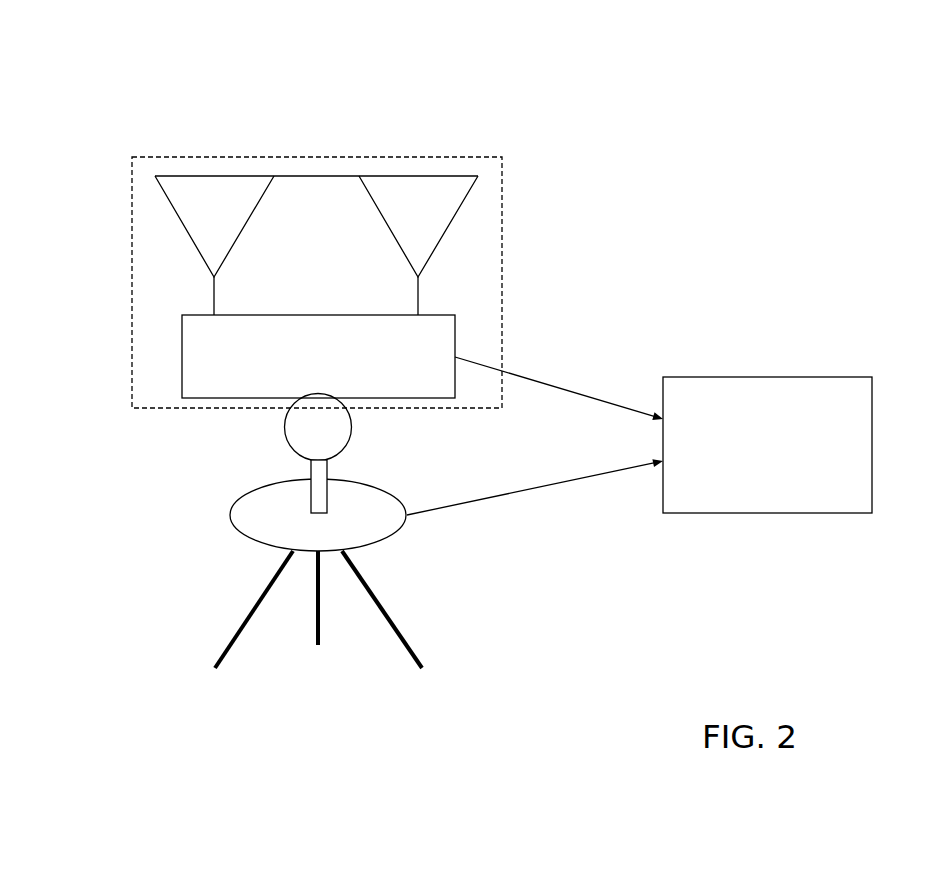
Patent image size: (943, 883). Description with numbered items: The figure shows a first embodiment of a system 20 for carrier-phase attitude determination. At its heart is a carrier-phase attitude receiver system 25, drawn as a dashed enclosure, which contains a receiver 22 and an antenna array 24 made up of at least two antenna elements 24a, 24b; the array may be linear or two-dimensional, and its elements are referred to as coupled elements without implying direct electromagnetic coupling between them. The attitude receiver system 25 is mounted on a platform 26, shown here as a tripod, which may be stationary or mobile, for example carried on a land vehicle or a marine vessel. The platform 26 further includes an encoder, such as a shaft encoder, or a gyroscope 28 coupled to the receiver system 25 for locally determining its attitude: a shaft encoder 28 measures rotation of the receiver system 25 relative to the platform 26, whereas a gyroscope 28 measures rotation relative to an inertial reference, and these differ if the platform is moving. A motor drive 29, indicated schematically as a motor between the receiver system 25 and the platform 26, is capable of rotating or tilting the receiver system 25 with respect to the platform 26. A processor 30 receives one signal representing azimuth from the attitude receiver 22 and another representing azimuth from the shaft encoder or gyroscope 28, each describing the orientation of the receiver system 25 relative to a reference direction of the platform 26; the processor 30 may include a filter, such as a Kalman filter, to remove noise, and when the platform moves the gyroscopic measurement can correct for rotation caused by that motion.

The system for carrier-phase attitude determination 20 is at (572, 593).
The carrier-phase attitude receiver 22 is at (185, 360).
The antenna array 24 is at (340, 166).
The antenna element 24a is at (258, 170).
The antenna element 24b is at (432, 169).
The carrier-phase attitude receiver system 25 is at (128, 393).
The platform 26 is at (243, 618).
The shaft encoder or gyroscope 28 is at (229, 515).
The motor drive 29 is at (281, 426).
The processor 30 is at (793, 513).